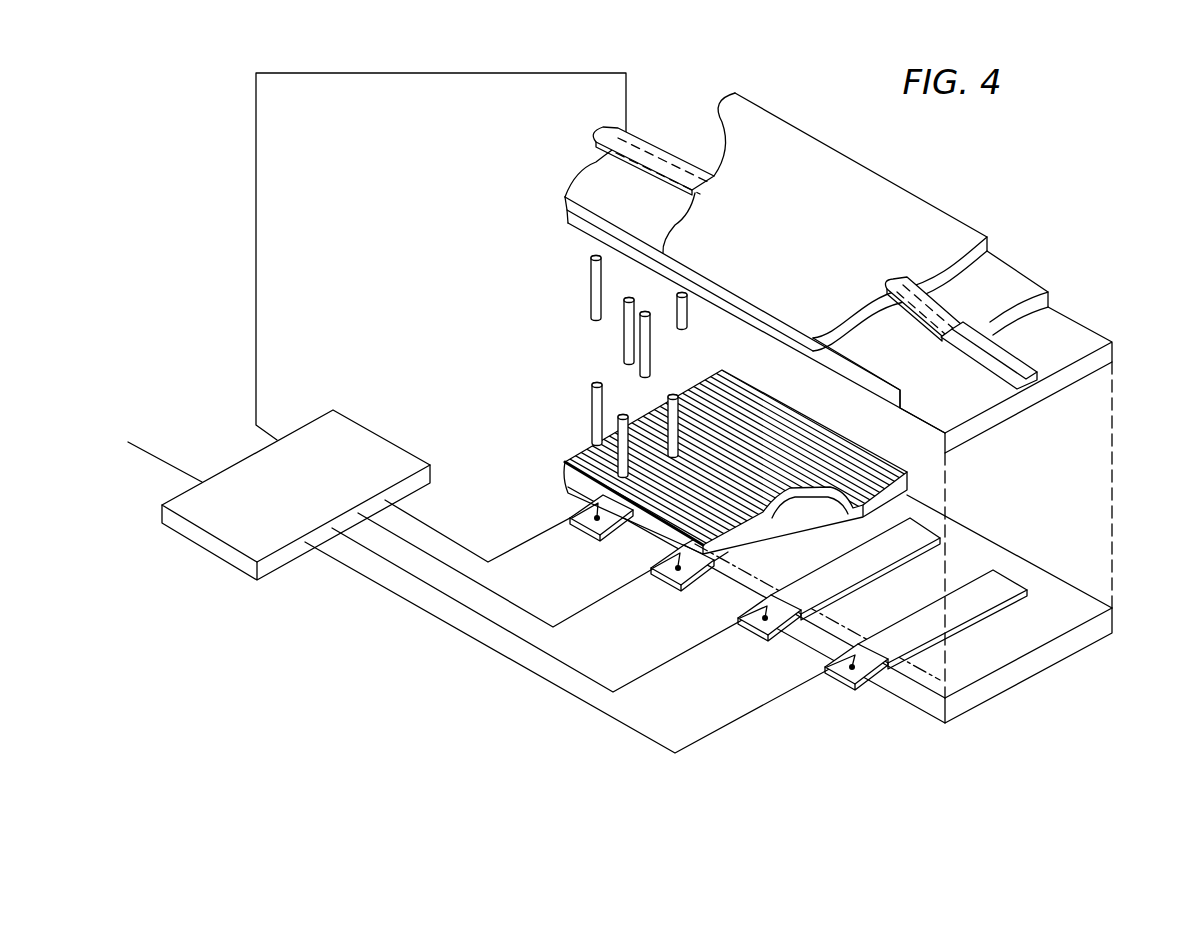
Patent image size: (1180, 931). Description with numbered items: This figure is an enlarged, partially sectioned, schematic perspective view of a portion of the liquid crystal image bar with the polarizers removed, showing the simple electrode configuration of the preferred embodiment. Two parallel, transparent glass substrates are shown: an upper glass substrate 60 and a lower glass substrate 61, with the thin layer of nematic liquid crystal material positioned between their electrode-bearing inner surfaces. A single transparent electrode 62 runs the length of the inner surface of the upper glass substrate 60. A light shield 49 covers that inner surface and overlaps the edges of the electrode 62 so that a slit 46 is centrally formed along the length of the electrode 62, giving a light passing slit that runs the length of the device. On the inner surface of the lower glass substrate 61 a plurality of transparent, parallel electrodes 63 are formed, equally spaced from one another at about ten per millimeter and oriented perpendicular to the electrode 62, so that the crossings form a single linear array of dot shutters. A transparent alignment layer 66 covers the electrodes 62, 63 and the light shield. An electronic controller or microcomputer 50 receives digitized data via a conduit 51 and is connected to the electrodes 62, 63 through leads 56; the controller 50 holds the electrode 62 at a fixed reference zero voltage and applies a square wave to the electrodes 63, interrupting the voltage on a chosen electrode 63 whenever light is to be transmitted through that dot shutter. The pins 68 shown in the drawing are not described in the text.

The slit 46 is at (650, 156).
The light shield 49 is at (867, 348).
The electronic controller or microcomputer 50 is at (353, 417).
The conduit 51 is at (170, 467).
The leads 56 is at (256, 158).
The upper glass substrate 60 is at (950, 236).
The lower glass substrate 61 is at (1003, 560).
The transparent electrode 62 is at (652, 132).
The transparent parallel electrodes 63 is at (862, 652).
The transparent alignment layer 66 is at (737, 407).
The pins 68 is at (623, 340).